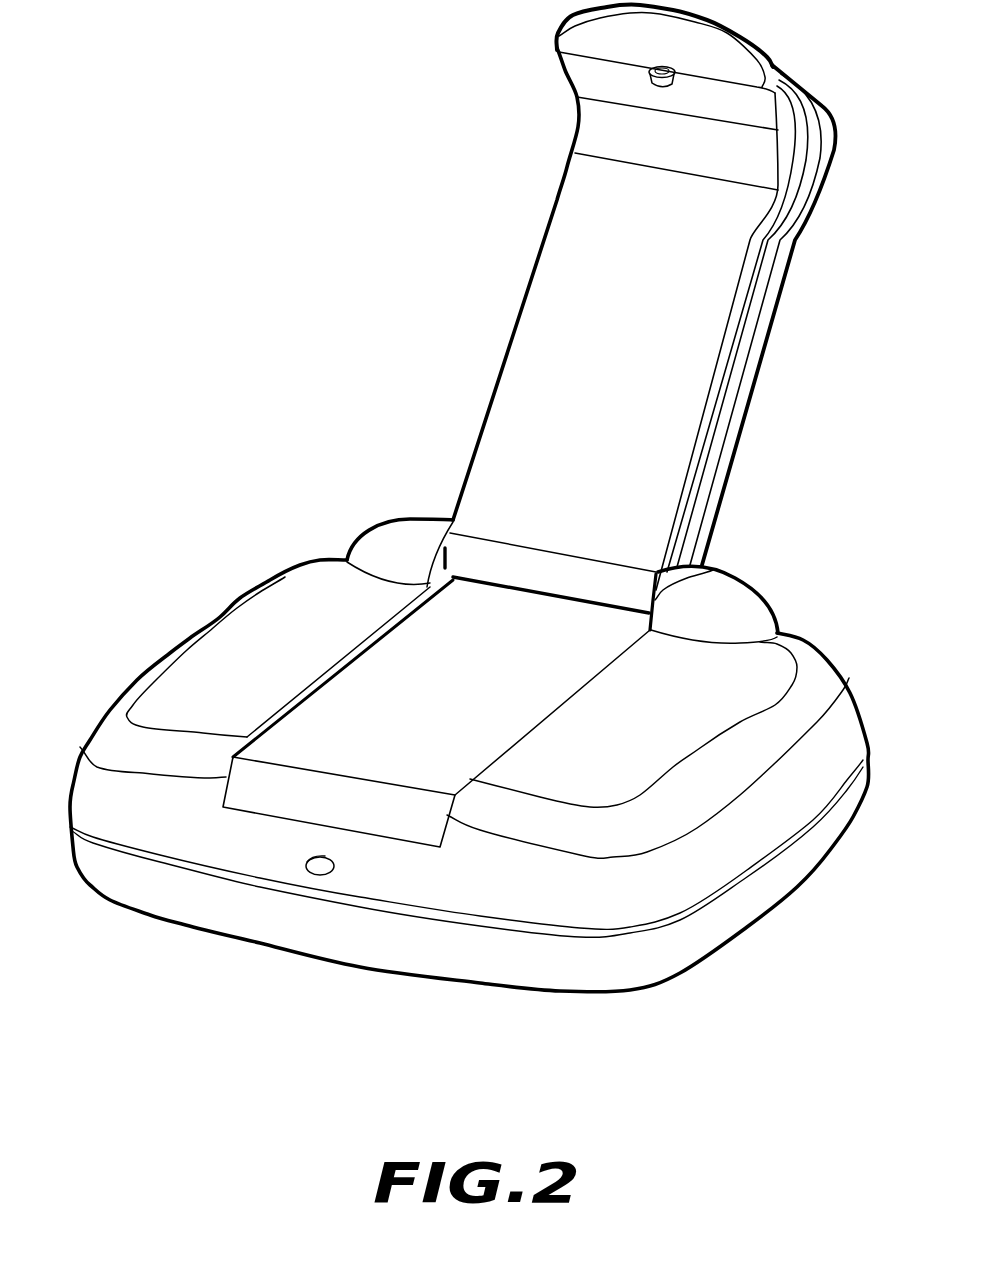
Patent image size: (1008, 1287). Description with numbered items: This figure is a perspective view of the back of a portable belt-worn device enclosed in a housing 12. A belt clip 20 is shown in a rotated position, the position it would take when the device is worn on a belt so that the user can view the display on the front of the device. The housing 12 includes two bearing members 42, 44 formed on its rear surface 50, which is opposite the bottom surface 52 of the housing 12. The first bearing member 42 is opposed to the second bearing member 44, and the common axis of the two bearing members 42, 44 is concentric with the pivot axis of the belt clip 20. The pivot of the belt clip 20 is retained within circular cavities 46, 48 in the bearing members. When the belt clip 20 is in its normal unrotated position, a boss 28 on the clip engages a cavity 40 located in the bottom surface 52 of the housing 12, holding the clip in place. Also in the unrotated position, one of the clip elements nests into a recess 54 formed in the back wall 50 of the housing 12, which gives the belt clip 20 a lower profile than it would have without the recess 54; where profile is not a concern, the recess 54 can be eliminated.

The housing 12 is at (233, 647).
The belt clip 20 is at (550, 312).
The boss 28 is at (650, 83).
The cavity 40 is at (307, 865).
The first bearing member 42 is at (440, 518).
The second bearing member 44 is at (747, 610).
The circular cavity 46 is at (443, 555).
The circular cavity 48 is at (713, 570).
The rear surface 50 is at (694, 714).
The bottom surface 52 is at (357, 952).
The recess 54 is at (343, 727).